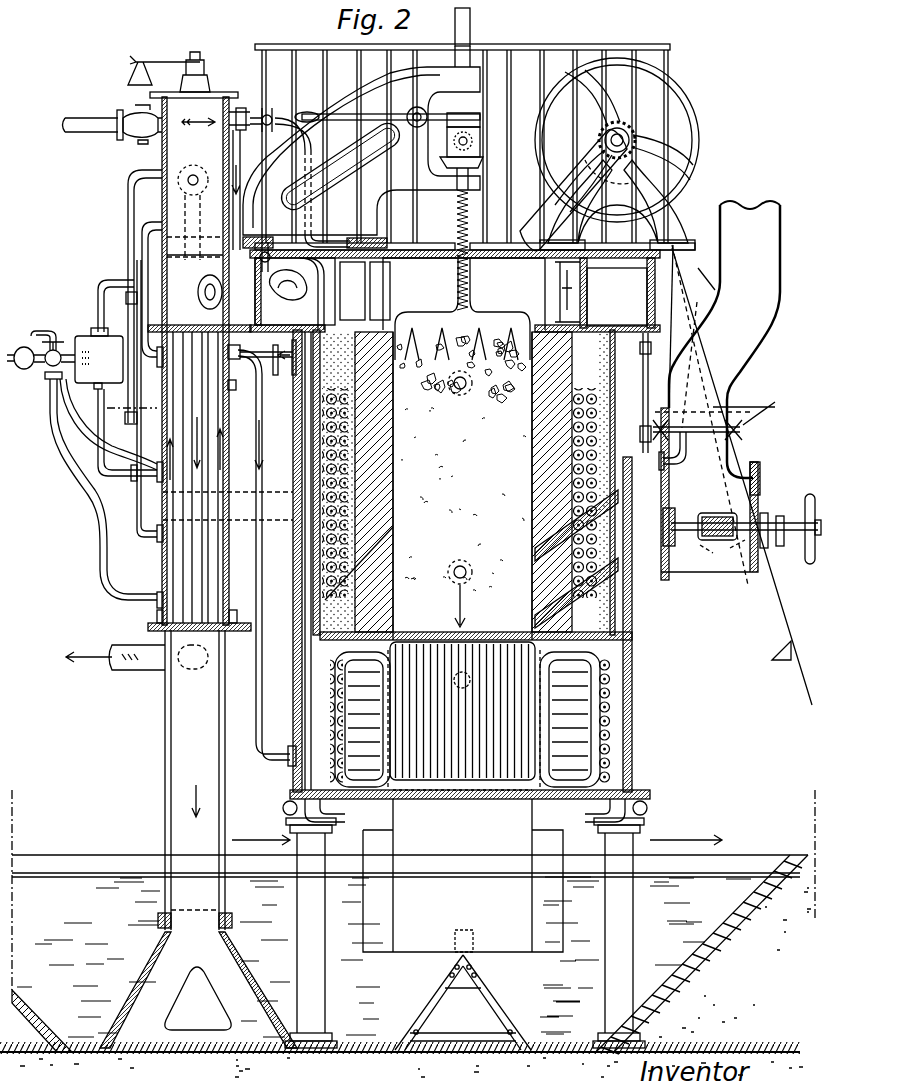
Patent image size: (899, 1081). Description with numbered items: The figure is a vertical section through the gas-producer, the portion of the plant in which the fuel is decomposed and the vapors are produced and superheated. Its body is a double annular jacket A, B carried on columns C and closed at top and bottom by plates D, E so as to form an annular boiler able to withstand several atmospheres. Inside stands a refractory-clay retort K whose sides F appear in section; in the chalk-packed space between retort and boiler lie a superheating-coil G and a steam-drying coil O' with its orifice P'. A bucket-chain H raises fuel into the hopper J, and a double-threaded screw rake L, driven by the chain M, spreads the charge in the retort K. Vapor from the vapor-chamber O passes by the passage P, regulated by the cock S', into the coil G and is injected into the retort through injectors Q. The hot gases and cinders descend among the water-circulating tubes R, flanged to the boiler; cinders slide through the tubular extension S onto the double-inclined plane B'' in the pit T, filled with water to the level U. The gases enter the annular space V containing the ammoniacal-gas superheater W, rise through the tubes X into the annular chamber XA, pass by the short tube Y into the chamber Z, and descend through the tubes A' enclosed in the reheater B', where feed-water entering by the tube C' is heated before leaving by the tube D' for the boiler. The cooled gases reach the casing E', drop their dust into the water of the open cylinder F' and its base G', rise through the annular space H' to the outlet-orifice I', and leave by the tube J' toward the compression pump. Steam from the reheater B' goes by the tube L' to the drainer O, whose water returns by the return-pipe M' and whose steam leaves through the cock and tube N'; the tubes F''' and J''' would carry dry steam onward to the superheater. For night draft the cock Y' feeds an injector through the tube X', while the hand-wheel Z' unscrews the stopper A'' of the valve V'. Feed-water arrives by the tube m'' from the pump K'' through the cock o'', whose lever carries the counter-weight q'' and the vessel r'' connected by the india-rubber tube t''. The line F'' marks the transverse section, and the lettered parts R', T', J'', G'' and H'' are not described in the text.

The hopper J is at (575, 190).
The tube X' is at (488, 186).
The chain M is at (387, 157).
The vapor-chamber O is at (197, 133).
The retort K is at (328, 387).
The cock and tube N' is at (113, 128).
The valve R' is at (239, 112).
The passage P is at (311, 219).
The cock Y' is at (267, 111).
The tube L' is at (133, 356).
The cock S' is at (269, 244).
The orifice P' is at (278, 293).
The india-rubber tube t'' is at (103, 304).
The water-tight vessel r'' is at (99, 358).
The counter-weight q'' is at (41, 366).
The tube m'' is at (43, 332).
The cock o'' is at (88, 486).
The section line F'' is at (127, 435).
The tube C' is at (100, 523).
The pipe J'' is at (111, 430).
The chamber Z is at (494, 419).
The short tube Y is at (261, 291).
The annular chamber XA is at (477, 293).
The coil O' is at (567, 292).
The plate T' is at (404, 321).
The rake L is at (464, 309).
The annular jacket wall B is at (374, 568).
The superheating-coil G is at (470, 508).
The retort sides F is at (359, 482).
The plate E is at (464, 474).
The tubes A' is at (650, 392).
The injector Q is at (437, 550).
The annular jacket wall A is at (391, 573).
The pump K'' is at (264, 555).
The tube D' is at (282, 756).
The plate D is at (447, 601).
The reheater B' is at (188, 617).
The casing E' is at (195, 780).
The tube J' is at (115, 657).
The outlet-orifice I' is at (193, 657).
The open cylinder F' is at (195, 900).
The base G' is at (198, 990).
The opening G'' is at (198, 998).
The annular space H' is at (193, 800).
The water-circulating tubes R is at (465, 716).
The return-pipe M' is at (349, 578).
The annular space V is at (467, 720).
The superheater W is at (514, 608).
The tubes X is at (472, 469).
The tube J''' is at (476, 834).
The columns C is at (465, 933).
The tubular extension S is at (463, 875).
The panel H'' is at (467, 930).
The double-inclined plane B'' is at (463, 1002).
The pit T is at (458, 990).
The water level U is at (413, 627).
The bucket-chain H is at (733, 475).
The tube F''' is at (721, 413).
The stopper A'' is at (739, 494).
The valve V' is at (722, 496).
The hand-wheel Z' is at (800, 484).